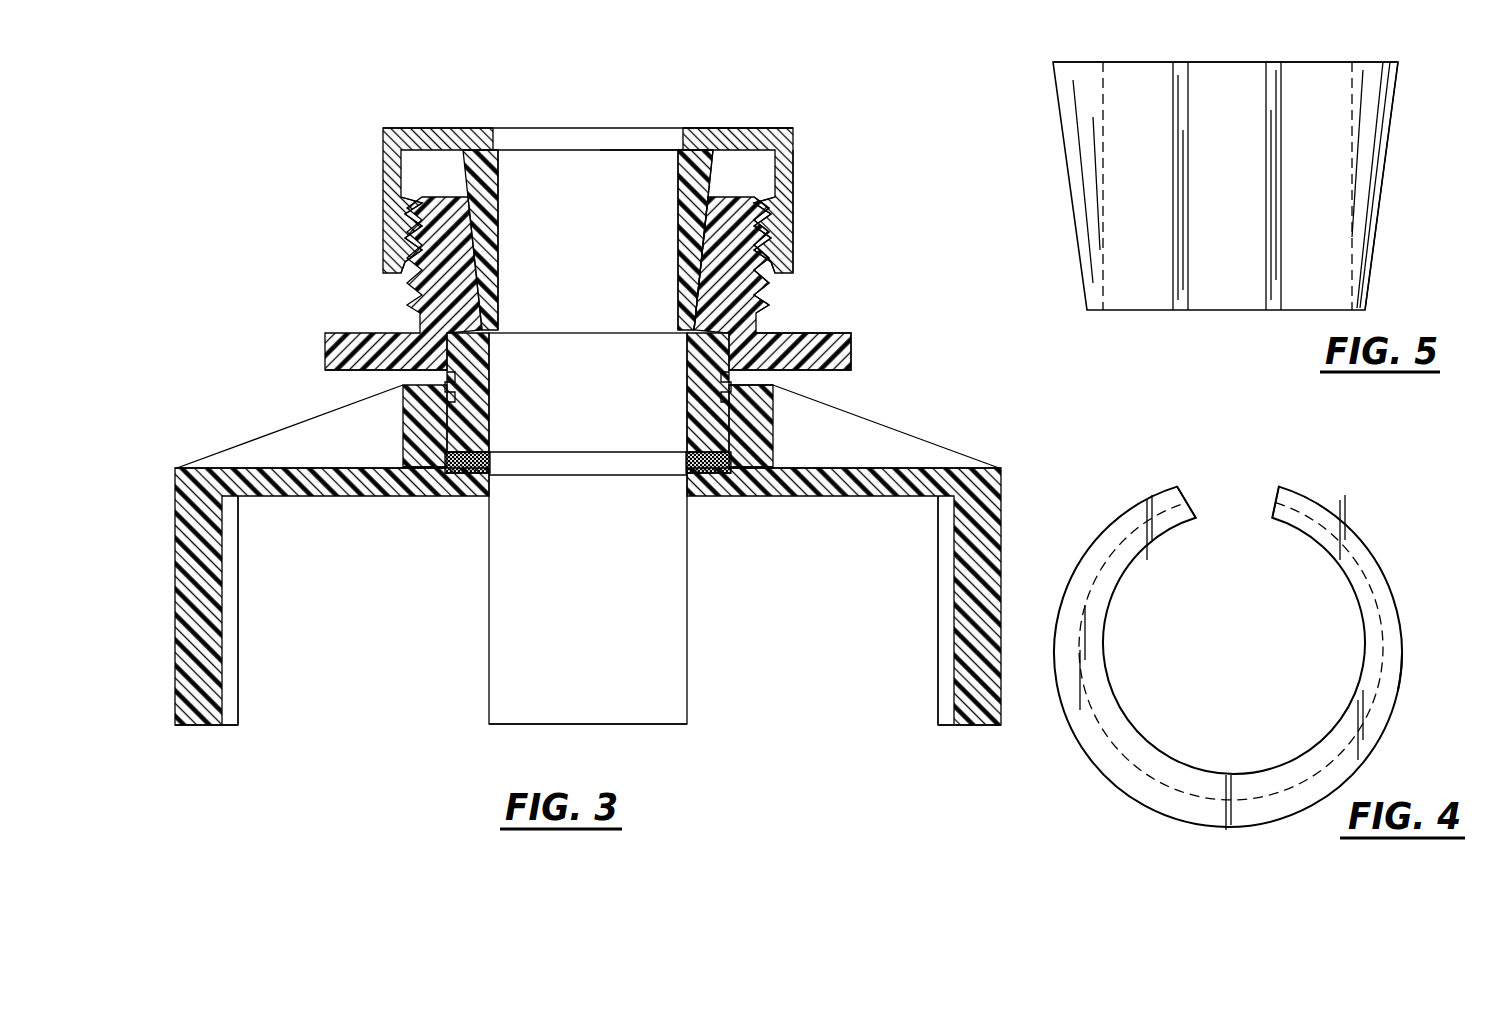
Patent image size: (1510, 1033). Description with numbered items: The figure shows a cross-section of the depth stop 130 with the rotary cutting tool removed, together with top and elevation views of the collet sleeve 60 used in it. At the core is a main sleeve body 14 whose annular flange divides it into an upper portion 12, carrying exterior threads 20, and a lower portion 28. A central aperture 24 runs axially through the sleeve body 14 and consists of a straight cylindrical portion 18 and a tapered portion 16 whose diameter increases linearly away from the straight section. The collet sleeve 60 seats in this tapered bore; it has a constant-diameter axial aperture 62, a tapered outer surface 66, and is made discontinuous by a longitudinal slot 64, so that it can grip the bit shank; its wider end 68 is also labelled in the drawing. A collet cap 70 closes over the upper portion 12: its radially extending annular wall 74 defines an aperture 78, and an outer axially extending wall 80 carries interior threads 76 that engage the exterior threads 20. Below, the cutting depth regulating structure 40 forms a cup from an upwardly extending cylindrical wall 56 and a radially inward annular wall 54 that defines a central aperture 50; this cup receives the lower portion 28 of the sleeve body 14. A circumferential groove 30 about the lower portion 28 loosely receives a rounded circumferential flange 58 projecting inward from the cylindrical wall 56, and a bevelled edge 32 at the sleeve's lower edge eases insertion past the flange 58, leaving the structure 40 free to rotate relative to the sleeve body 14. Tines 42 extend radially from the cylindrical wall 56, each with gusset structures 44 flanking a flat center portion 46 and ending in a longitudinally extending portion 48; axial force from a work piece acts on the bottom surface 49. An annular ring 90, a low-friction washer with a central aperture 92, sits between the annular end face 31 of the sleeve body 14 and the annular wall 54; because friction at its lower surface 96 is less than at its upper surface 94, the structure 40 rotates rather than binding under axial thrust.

In FIG. 3, the upper portion 12 is at (412, 305).
In FIG. 3, the main sleeve body 14 is at (752, 322).
In FIG. 3, the tapered portion 16 is at (488, 355).
In FIG. 3, the straight cylindrical portion 18 is at (692, 400).
In FIG. 3, the exterior threads 20 is at (768, 290).
In FIG. 3, the central aperture 24 is at (700, 248).
In FIG. 3, the lower portion 28 is at (440, 375).
In FIG. 3, the circumferential groove 30 is at (432, 412).
In FIG. 3, the annular end face 31 is at (434, 484).
In FIG. 3, the bevelled edge 32 is at (740, 465).
In FIG. 3, the cutting depth regulating structure 40 is at (1010, 468).
In FIG. 3, the tines 42 is at (178, 482).
In FIG. 3, the gusset structures 44 is at (305, 418).
In FIG. 3, the center portion 46 is at (280, 462).
In FIG. 3, the longitudinally extending portion 48 is at (180, 705).
In FIG. 3, the bottom surface 49 is at (950, 725).
In FIG. 3, the central aperture 50 is at (490, 480).
In FIG. 3, the annular wall 54 is at (707, 474).
In FIG. 3, the cylindrical wall 56 is at (758, 405).
In FIG. 3, the circumferential flange 58 is at (458, 400).
In FIG. 3, the collet sleeve 60 is at (452, 162).
In FIG. 5, the collet sleeve 60 is at (1412, 62).
In FIG. 4, the collet sleeve 60 is at (1372, 512).
In FIG. 3, the axial aperture 62 is at (499, 228).
In FIG. 5, the axial aperture 62 is at (1350, 110).
In FIG. 4, the axial aperture 62 is at (1342, 615).
In FIG. 5, the longitudinal slot 64 is at (1272, 300).
In FIG. 4, the longitudinal slot 64 is at (1272, 490).
In FIG. 3, the outer surface 66 is at (745, 236).
In FIG. 5, the outer surface 66 is at (1385, 175).
In FIG. 3, the top end 68 is at (482, 152).
In FIG. 5, the top end 68 is at (1090, 62).
In FIG. 4, the top end 68 is at (1395, 622).
In FIG. 3, the collet cap 70 is at (796, 128).
In FIG. 3, the annular wall 74 is at (712, 128).
In FIG. 3, the interior threads 76 is at (755, 196).
In FIG. 3, the aperture 78 is at (682, 150).
In FIG. 3, the axially extending wall 80 is at (795, 190).
In FIG. 3, the annular ring 90 is at (472, 487).
In FIG. 3, the aperture 92 is at (500, 464).
In FIG. 3, the upper surface 94 is at (480, 450).
In FIG. 3, the lower surface 96 is at (688, 480).
In FIG. 3, the depth stop 130 is at (866, 157).